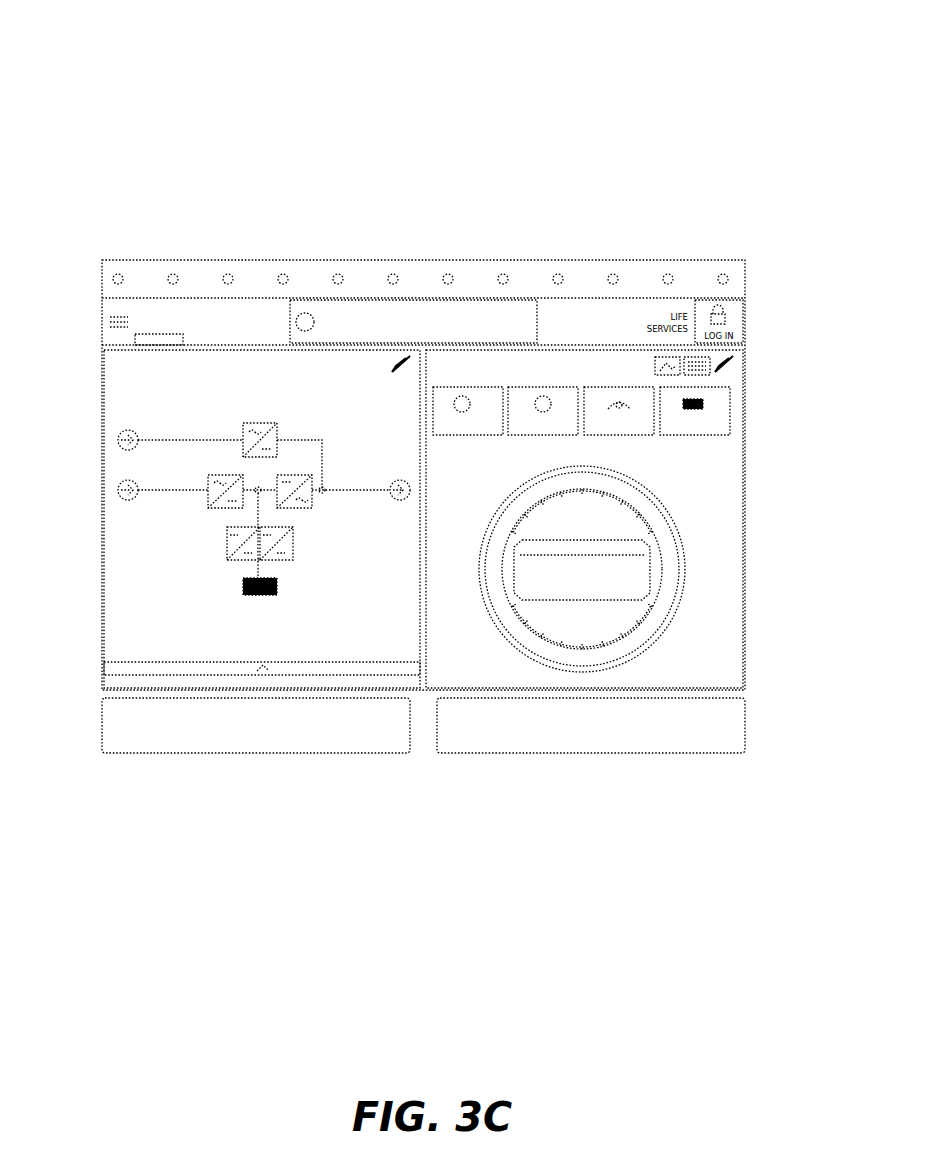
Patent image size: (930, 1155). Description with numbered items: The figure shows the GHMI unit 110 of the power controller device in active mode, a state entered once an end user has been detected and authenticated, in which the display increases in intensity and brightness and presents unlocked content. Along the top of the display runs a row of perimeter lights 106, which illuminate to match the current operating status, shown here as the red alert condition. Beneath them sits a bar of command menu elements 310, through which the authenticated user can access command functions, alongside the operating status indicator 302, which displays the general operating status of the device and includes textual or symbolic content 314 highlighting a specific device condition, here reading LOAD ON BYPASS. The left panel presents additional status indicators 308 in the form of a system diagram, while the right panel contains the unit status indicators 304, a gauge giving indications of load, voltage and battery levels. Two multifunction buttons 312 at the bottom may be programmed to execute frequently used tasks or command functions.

The GHMI unit 110 is at (170, 68).
The perimeter lights 106 is at (527, 278).
The command menu elements 310 is at (143, 310).
The operating status indicator 302 is at (353, 321).
The textual or symbolic content 314 is at (448, 328).
The additional status indicators 308 is at (175, 543).
The unit status indicators 304 is at (692, 643).
The multifunction buttons 312 is at (423, 725).